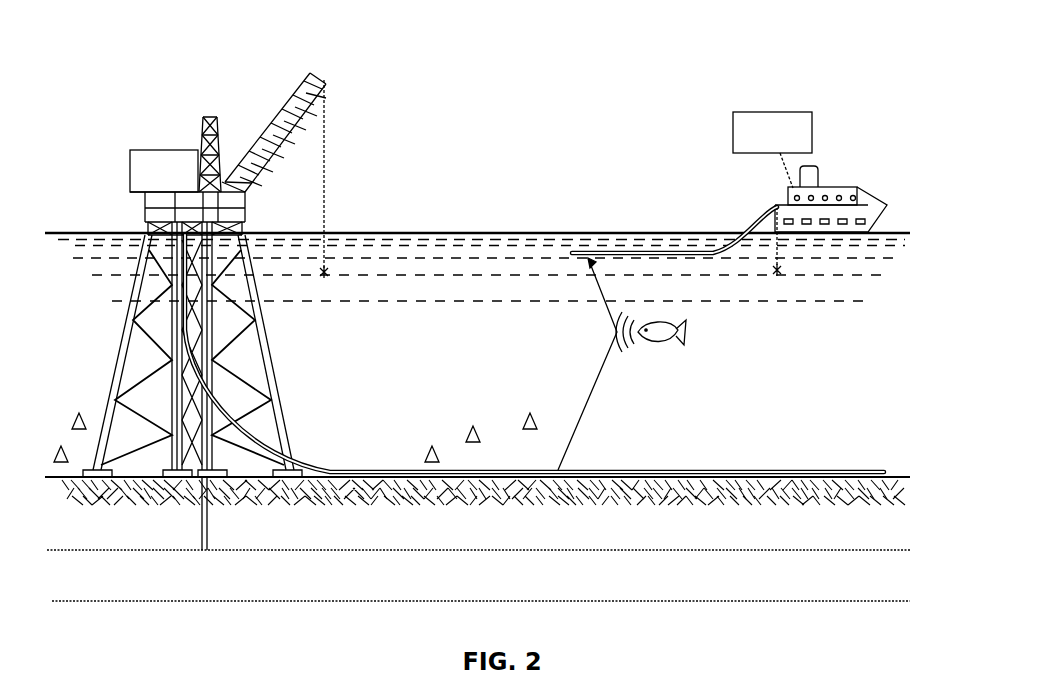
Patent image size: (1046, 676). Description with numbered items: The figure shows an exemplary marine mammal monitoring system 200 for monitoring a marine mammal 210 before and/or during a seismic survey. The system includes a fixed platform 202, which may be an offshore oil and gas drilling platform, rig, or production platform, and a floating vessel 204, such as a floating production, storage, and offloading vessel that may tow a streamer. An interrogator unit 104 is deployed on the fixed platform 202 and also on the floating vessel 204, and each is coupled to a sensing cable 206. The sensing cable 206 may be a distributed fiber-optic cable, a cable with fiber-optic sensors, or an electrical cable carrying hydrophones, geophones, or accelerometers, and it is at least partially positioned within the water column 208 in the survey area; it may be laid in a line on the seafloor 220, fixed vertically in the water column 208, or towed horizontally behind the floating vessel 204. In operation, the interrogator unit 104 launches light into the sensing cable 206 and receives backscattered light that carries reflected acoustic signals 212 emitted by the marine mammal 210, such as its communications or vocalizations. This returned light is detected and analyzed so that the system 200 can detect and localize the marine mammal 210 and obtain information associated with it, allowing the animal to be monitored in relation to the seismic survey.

The marine mammal monitoring system 200 is at (246, 31).
The interrogator unit 104 is at (157, 150).
The fixed platform 202 is at (122, 330).
The floating vessel 204 is at (868, 232).
The sensing cable 206 is at (313, 460).
The water column 208 is at (440, 258).
The marine mammal 210 is at (685, 338).
The reflected acoustic signals 212 is at (592, 273).
The seafloor 220 is at (890, 470).